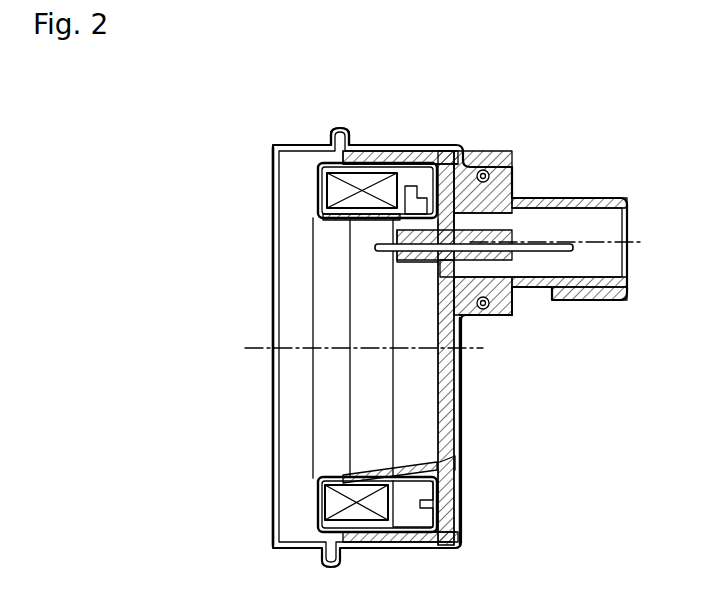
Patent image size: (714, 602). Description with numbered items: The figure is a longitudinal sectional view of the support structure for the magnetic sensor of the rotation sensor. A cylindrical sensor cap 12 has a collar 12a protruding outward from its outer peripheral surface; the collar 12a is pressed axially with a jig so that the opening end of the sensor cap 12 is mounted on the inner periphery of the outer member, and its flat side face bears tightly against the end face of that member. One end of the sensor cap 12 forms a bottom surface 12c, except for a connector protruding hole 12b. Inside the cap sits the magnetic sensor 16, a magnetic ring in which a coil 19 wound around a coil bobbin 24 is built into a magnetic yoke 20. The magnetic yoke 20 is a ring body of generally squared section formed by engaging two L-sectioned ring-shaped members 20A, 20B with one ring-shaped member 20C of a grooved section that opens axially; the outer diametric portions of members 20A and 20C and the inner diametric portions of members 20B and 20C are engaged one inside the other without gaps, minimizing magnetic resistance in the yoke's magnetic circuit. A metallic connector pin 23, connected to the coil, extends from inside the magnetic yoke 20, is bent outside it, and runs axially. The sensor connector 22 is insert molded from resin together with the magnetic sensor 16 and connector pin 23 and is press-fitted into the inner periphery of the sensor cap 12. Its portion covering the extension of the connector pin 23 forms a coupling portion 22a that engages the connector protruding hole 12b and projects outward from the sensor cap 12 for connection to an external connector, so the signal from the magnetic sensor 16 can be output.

The sensor cap 12 is at (397, 147).
The collar 12a is at (337, 128).
The connector protruding hole 12b is at (535, 182).
The bottom surface 12c is at (460, 422).
The magnetic sensor 16 is at (287, 207).
The coil 19 is at (337, 162).
The magnetic yoke 20 is at (313, 180).
The ring-shaped member 20A is at (315, 518).
The ring-shaped member 20B is at (330, 477).
The ring-shaped member 20C is at (460, 458).
The sensor connector 22 is at (435, 313).
The coupling portion 22a is at (513, 300).
The connector pin 23 is at (555, 240).
The coil bobbin 24 is at (430, 158).